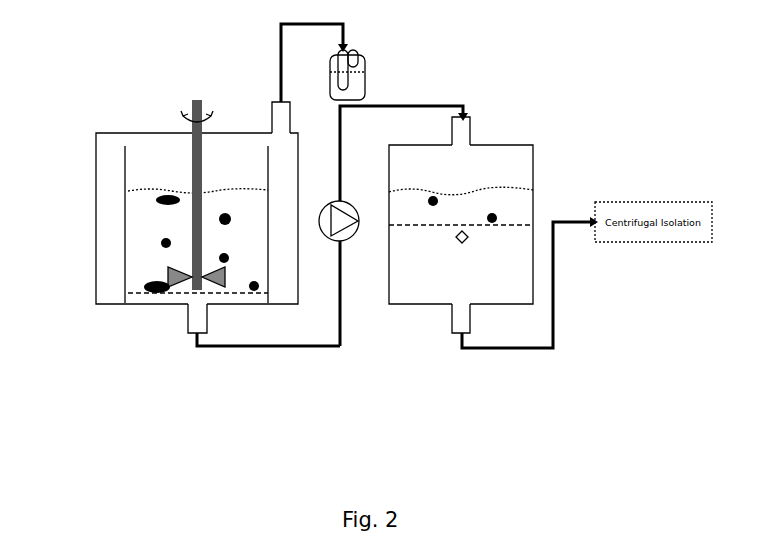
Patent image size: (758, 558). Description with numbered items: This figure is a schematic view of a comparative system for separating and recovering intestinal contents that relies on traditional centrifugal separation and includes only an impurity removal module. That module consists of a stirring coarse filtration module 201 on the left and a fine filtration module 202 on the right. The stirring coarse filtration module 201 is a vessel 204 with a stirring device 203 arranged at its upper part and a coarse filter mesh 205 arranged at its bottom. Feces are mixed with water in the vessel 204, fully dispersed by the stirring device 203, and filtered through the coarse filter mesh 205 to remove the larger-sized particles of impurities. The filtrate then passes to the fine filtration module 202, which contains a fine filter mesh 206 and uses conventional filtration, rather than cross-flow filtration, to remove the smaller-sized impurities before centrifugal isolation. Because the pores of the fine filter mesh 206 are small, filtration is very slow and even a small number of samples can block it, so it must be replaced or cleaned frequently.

The stirring coarse filtration module 201 is at (122, 323).
The fine filtration module 202 is at (420, 326).
The stirring device 203 is at (193, 107).
The vessel 204 is at (122, 140).
The coarse filter mesh 205 is at (142, 287).
The fine filter mesh 206 is at (512, 223).